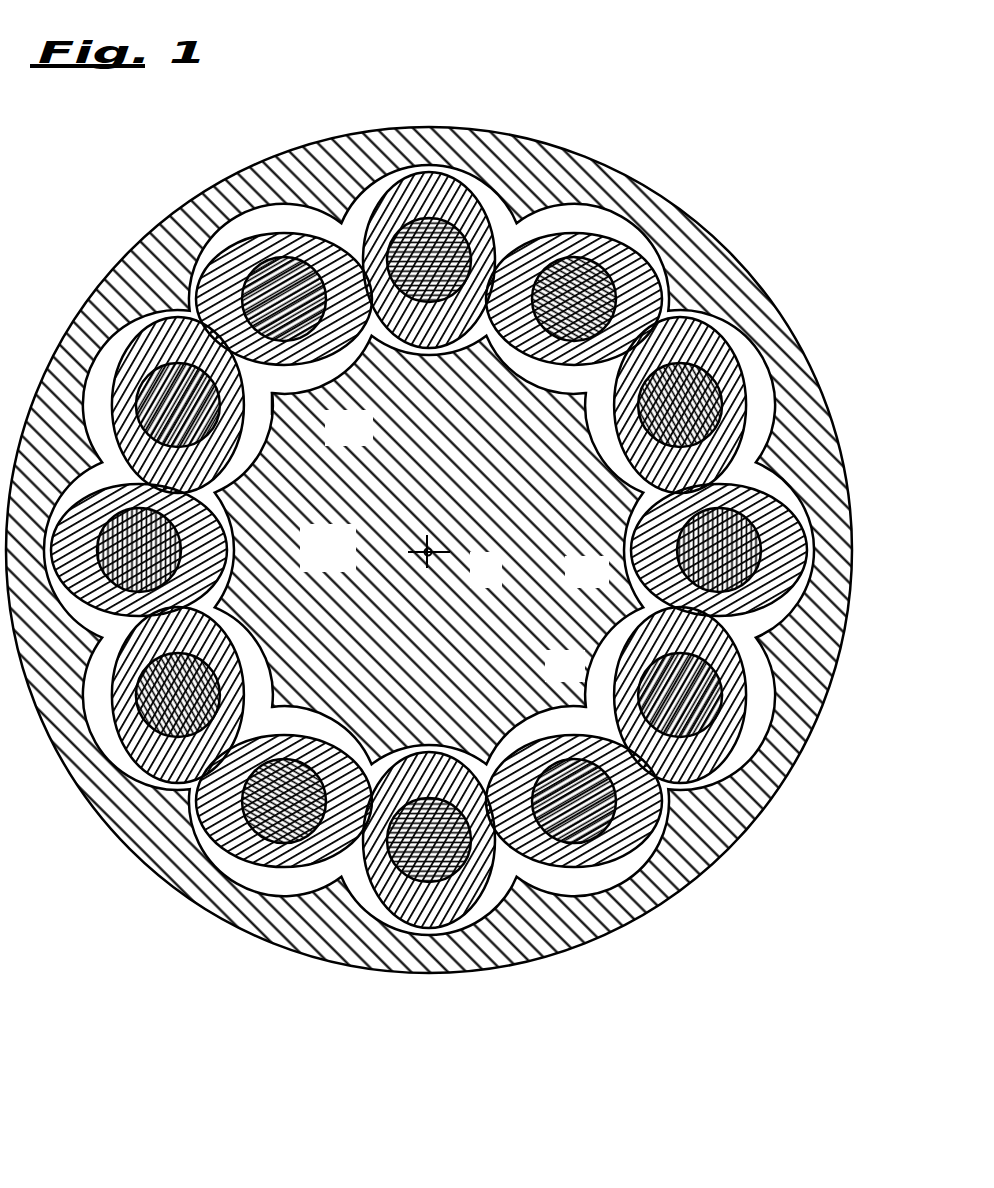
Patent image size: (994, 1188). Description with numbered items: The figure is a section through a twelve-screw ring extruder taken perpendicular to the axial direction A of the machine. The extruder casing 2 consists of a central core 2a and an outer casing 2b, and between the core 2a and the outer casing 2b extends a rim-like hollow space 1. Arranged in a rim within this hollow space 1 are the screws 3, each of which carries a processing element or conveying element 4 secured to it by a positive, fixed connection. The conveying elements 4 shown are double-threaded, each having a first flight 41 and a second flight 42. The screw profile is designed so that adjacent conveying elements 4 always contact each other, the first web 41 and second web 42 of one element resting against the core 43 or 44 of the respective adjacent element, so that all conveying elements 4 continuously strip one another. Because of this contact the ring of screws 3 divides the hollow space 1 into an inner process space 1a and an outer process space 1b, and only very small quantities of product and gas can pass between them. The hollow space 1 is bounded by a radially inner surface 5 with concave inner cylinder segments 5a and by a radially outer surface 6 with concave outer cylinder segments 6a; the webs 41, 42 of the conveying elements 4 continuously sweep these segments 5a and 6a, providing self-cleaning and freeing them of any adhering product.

The hollow space 1 is at (451, 564).
The inner process space 1a is at (243, 438).
The outer process space 1b is at (132, 348).
The extruder casing 2 is at (429, 550).
The core 2a is at (346, 566).
The outer casing 2b is at (727, 287).
The screw 3 is at (600, 822).
The conveying element 4 is at (474, 599).
The first flight 41 is at (740, 775).
The second flight 42 is at (758, 628).
The core of conveying element 43 is at (593, 715).
The core of conveying element 44 is at (653, 600).
The radially inner surface 5 is at (418, 812).
The concave inner cylinder segment 5a is at (325, 760).
The radially outer surface 6 is at (482, 905).
The concave outer cylinder segment 6a is at (225, 868).
The axial direction A is at (433, 557).